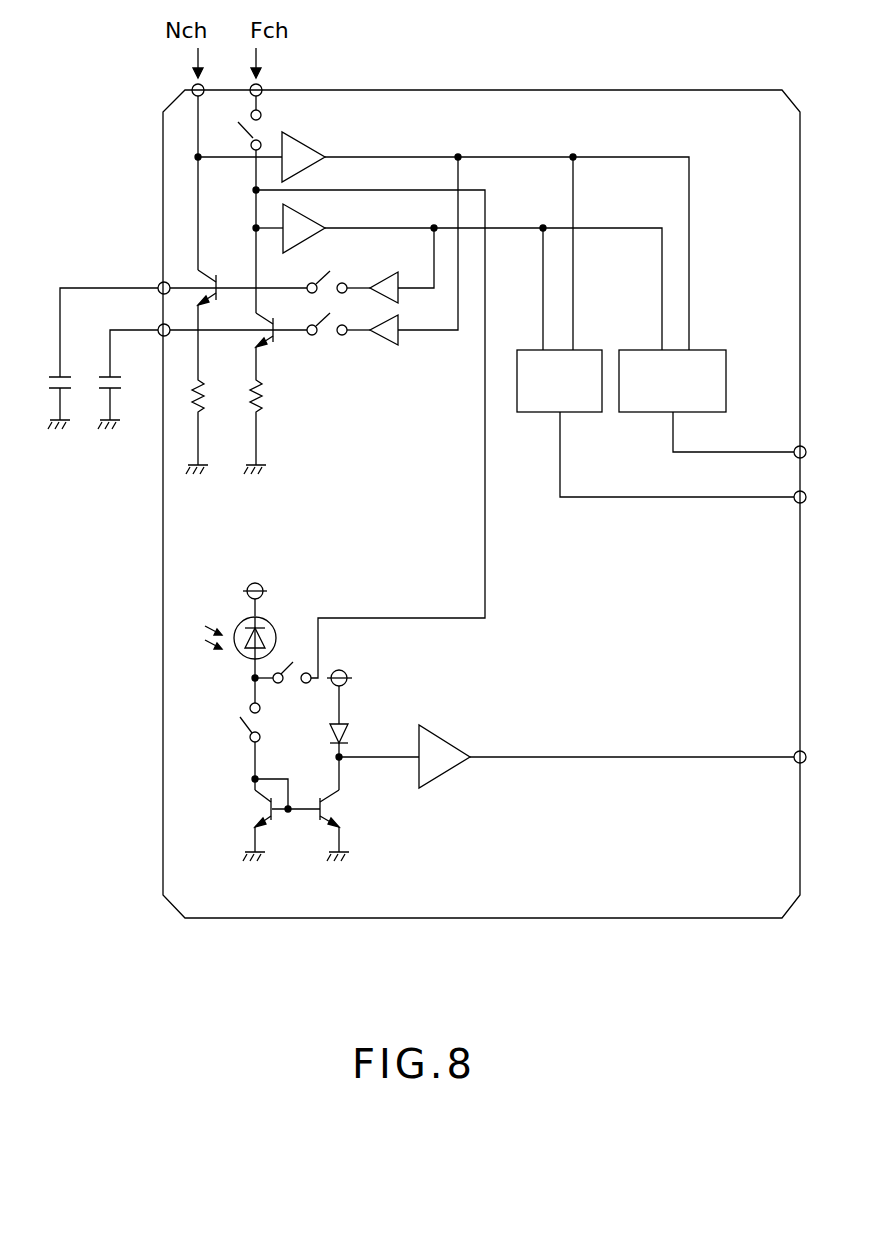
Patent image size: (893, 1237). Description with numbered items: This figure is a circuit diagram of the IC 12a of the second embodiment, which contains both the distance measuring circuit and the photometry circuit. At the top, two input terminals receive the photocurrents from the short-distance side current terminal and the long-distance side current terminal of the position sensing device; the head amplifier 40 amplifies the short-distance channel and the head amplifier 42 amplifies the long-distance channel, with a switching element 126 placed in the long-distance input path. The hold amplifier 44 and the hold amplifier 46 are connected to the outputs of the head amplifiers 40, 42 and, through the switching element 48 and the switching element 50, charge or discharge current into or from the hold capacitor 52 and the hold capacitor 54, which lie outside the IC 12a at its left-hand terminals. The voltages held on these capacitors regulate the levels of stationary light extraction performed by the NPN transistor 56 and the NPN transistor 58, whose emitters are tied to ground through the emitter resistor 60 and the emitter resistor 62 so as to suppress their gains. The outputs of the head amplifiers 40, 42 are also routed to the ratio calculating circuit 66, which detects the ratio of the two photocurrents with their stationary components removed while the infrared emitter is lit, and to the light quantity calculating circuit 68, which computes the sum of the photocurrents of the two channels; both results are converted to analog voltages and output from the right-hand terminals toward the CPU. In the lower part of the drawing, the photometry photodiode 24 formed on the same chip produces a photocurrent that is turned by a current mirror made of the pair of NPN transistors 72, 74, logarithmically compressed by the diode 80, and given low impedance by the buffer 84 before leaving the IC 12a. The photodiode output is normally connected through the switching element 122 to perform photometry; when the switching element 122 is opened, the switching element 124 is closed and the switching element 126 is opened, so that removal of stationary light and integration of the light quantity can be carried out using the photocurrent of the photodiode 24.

The IC 12a is at (500, 90).
The switching element 126 is at (267, 125).
The head amplifier 40 is at (313, 143).
The head amplifier 42 is at (310, 212).
The hold amplifier 44 is at (380, 278).
The hold amplifier 46 is at (388, 352).
The switching element 48 is at (344, 256).
The switching element 50 is at (326, 348).
The NPN transistor 56 is at (222, 270).
The NPN transistor 58 is at (262, 350).
The emitter resistor 60 is at (212, 397).
The emitter resistor 62 is at (267, 400).
The hold capacitor 52 is at (42, 383).
The hold capacitor 54 is at (135, 385).
The ratio calculating circuit 66 is at (532, 413).
The light quantity calculating circuit 68 is at (726, 362).
The photometry photodiode 24 is at (238, 655).
The switching element 124 is at (290, 685).
The switching element 122 is at (265, 725).
The NPN transistor 72 is at (253, 810).
The NPN transistor 74 is at (340, 808).
The diode 80 is at (352, 727).
The buffer 84 is at (440, 735).